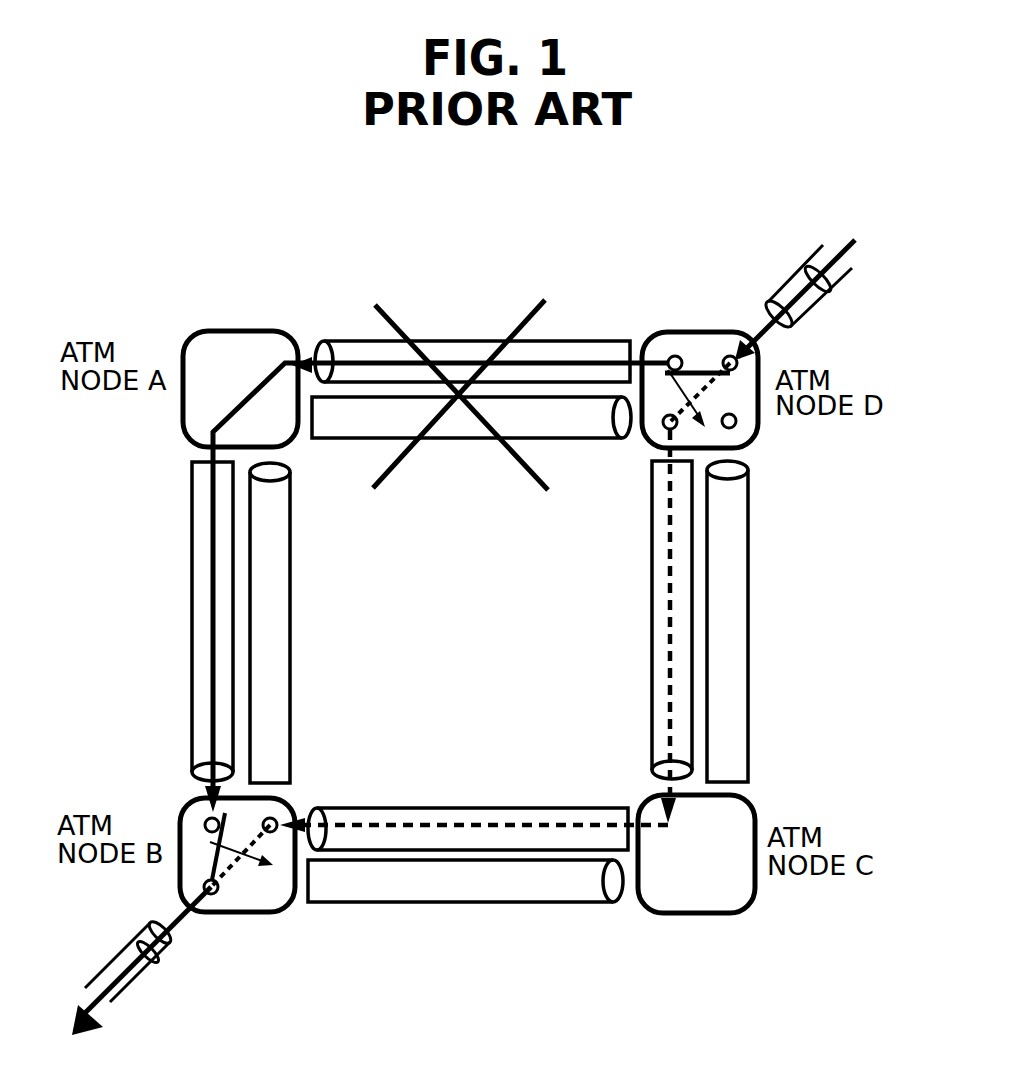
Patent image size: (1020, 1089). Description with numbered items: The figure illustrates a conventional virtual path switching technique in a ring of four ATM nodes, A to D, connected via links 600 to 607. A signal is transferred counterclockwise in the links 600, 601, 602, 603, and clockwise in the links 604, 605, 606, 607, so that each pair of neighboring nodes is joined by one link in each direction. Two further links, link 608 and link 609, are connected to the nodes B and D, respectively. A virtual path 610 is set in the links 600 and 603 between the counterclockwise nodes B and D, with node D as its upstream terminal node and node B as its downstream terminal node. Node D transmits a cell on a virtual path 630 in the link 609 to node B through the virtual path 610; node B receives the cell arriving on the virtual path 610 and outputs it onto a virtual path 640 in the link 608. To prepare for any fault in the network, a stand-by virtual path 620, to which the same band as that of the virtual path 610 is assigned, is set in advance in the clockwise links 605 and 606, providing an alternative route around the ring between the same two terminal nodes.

The link 600 is at (198, 536).
The link 601 is at (500, 890).
The link 602 is at (738, 705).
The link 603 is at (356, 340).
The link 604 is at (260, 588).
The link 605 is at (395, 808).
The link 606 is at (685, 606).
The link 607 is at (585, 433).
The link 608 is at (130, 988).
The link 609 is at (800, 270).
The virtual path 610 is at (446, 345).
The stand-by virtual path 620 is at (672, 538).
The virtual path 630 is at (830, 288).
The virtual path 640 is at (155, 962).